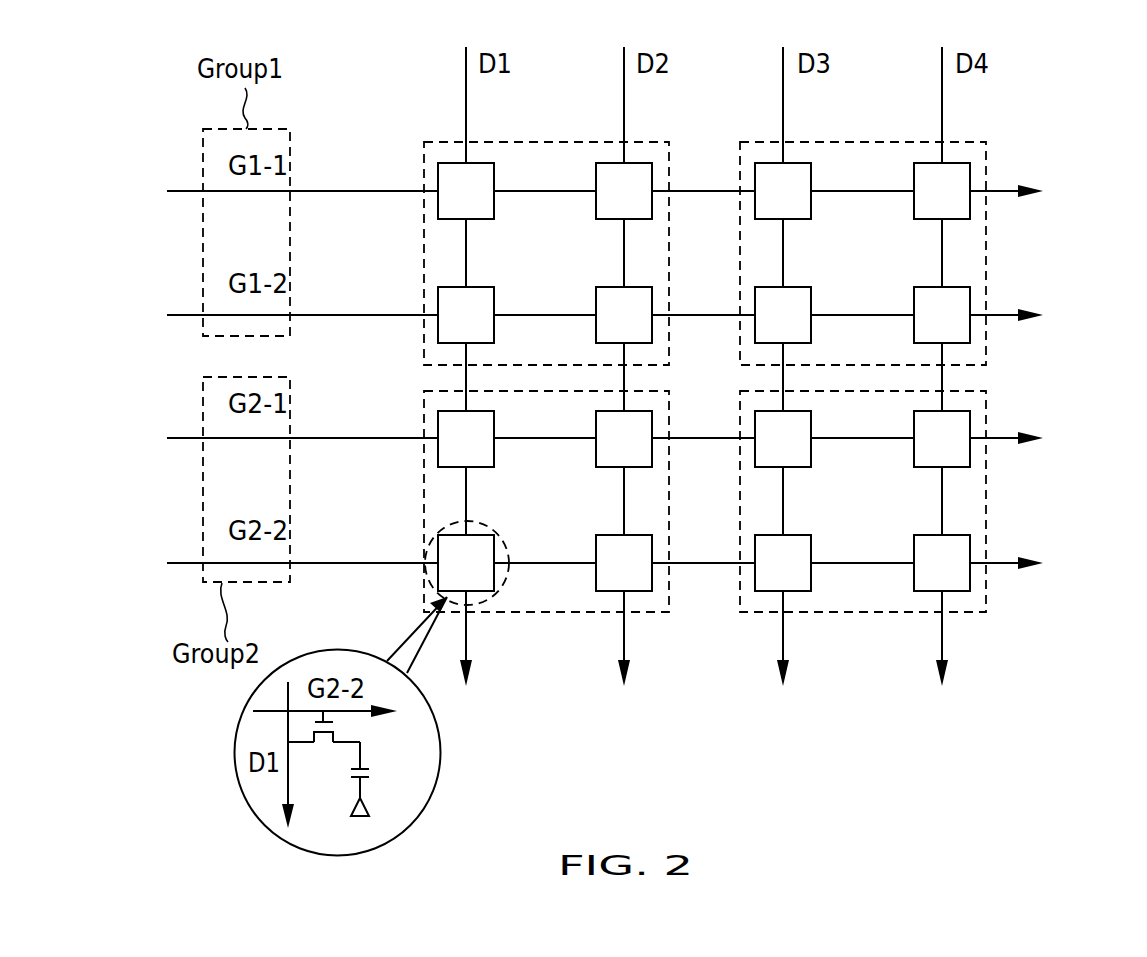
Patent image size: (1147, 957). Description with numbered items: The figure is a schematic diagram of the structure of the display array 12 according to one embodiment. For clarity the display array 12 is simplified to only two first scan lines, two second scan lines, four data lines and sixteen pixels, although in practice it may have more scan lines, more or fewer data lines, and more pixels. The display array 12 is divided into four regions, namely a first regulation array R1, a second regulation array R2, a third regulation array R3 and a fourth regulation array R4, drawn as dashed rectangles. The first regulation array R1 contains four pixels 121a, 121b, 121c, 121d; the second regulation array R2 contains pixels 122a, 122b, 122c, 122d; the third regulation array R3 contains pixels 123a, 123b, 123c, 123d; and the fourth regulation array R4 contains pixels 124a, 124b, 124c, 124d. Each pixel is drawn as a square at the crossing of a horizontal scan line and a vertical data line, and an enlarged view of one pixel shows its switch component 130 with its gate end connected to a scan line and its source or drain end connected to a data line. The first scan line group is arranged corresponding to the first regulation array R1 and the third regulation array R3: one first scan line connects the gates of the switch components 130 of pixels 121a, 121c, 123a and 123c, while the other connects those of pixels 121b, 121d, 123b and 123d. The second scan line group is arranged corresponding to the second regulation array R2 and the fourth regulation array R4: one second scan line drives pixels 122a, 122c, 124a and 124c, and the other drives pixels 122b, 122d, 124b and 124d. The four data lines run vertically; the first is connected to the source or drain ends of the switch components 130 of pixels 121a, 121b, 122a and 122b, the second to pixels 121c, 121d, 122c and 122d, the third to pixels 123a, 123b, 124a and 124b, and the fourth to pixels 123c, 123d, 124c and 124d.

The display array 12 is at (1020, 378).
The pixel 121a is at (484, 219).
The pixel 121b is at (484, 287).
The pixel 121c is at (596, 179).
The pixel 121d is at (596, 328).
The pixel 122a is at (484, 467).
The pixel 122b is at (484, 535).
The pixel 122c is at (596, 427).
The pixel 122d is at (596, 576).
The pixel 123a is at (801, 219).
The pixel 123b is at (801, 287).
The pixel 123c is at (914, 179).
The pixel 123d is at (914, 328).
The pixel 124a is at (801, 467).
The pixel 124b is at (801, 535).
The pixel 124c is at (914, 427).
The pixel 124d is at (914, 576).
The switch component 130 is at (343, 727).
The first regulation array R1 is at (441, 142).
The second regulation array R2 is at (424, 518).
The third regulation array R3 is at (986, 167).
The fourth regulation array R4 is at (966, 614).